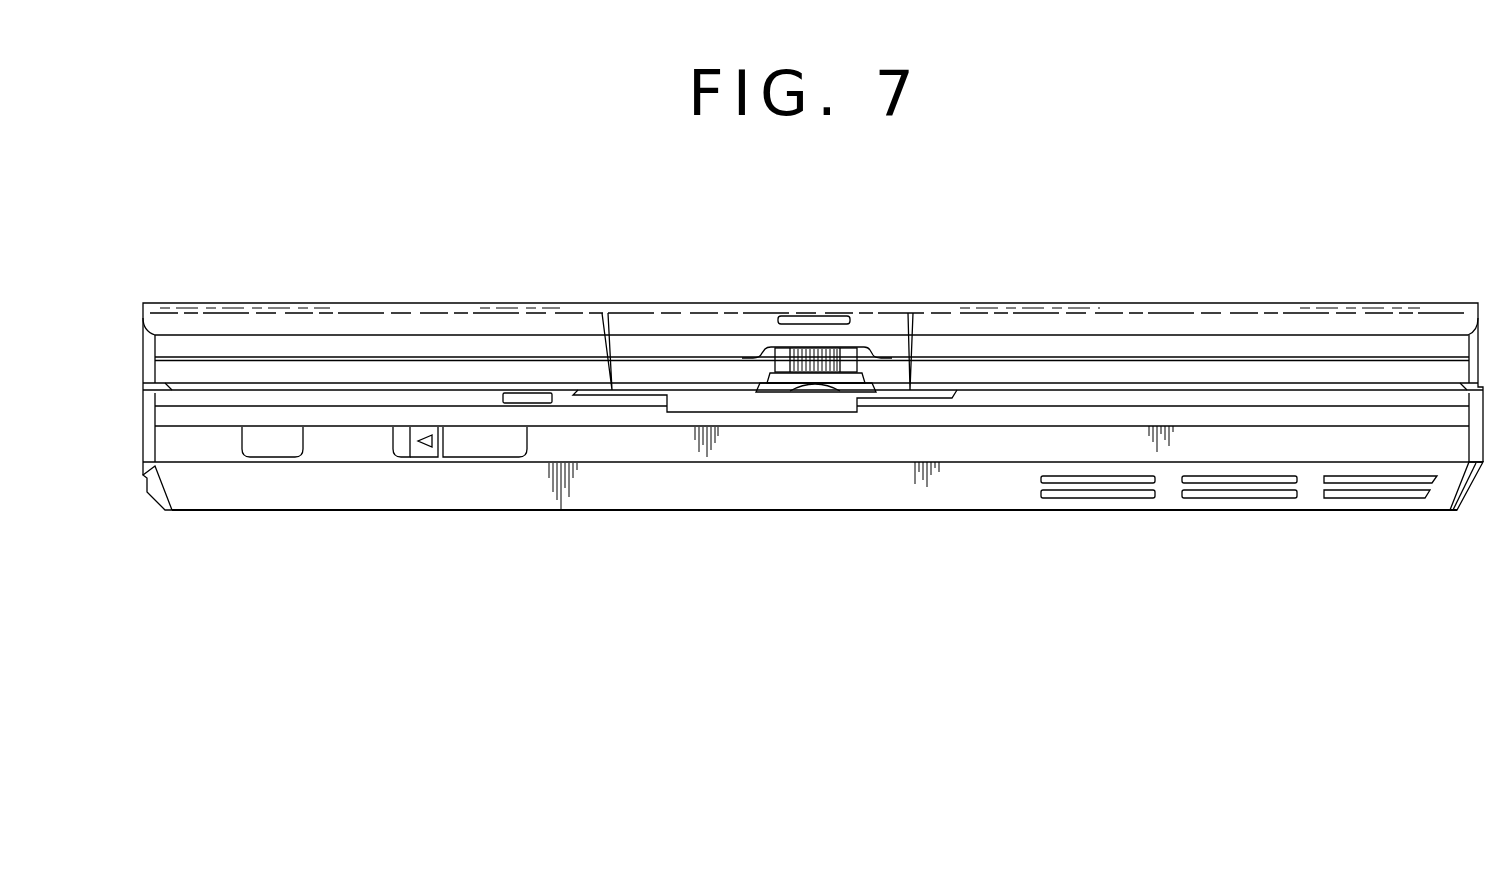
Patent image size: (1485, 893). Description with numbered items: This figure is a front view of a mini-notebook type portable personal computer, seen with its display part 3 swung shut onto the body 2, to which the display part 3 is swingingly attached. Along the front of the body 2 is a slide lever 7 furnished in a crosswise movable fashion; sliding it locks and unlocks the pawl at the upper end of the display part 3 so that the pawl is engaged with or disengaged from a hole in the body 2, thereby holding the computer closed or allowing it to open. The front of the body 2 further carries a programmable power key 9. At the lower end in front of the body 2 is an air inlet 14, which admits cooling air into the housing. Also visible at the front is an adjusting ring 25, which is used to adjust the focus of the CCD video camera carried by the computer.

The body 2 is at (783, 512).
The display part 3 is at (1267, 300).
The slide lever 7 is at (472, 447).
The programmable power key (PPK) 9 is at (272, 448).
The air inlet 14 is at (1237, 496).
The adjusting ring 25 is at (818, 350).